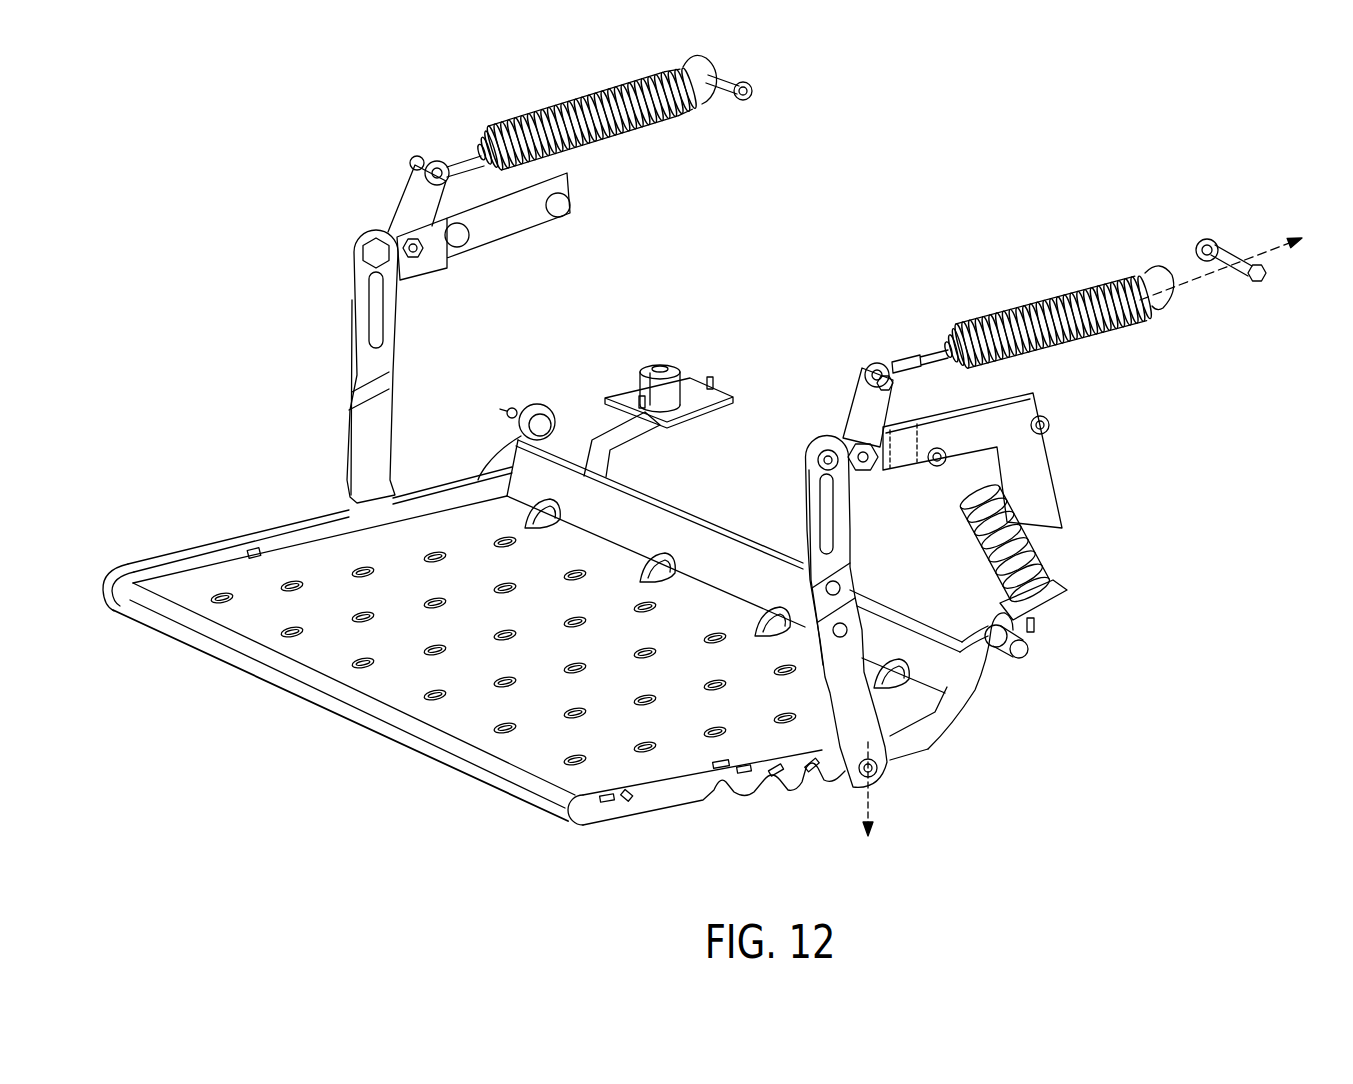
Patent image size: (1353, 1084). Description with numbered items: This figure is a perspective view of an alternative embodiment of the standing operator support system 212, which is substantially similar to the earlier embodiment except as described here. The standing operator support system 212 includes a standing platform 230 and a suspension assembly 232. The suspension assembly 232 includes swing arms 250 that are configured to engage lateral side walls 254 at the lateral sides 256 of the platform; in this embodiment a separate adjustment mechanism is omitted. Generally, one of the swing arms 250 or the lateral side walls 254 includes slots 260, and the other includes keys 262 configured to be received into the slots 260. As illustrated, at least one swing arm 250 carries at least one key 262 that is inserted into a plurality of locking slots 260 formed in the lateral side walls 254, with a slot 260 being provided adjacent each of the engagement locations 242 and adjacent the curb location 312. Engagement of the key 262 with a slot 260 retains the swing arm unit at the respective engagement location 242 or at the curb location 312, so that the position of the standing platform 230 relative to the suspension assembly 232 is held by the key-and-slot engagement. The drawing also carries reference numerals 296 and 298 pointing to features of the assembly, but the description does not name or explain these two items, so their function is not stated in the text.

The standing operator support system 212 is at (1066, 120).
The standing platform 230 is at (523, 798).
The suspension assembly 232 is at (1098, 425).
The engagement locations 242 is at (777, 776).
The swing arms 250 is at (398, 396).
The lateral side walls 254 is at (192, 556).
The lateral sides 256 is at (473, 430).
The slots 260 is at (745, 772).
The key 262 is at (902, 738).
The direction of movement 296 is at (880, 792).
The bolt 298 is at (1253, 235).
The curb location 312 is at (626, 804).